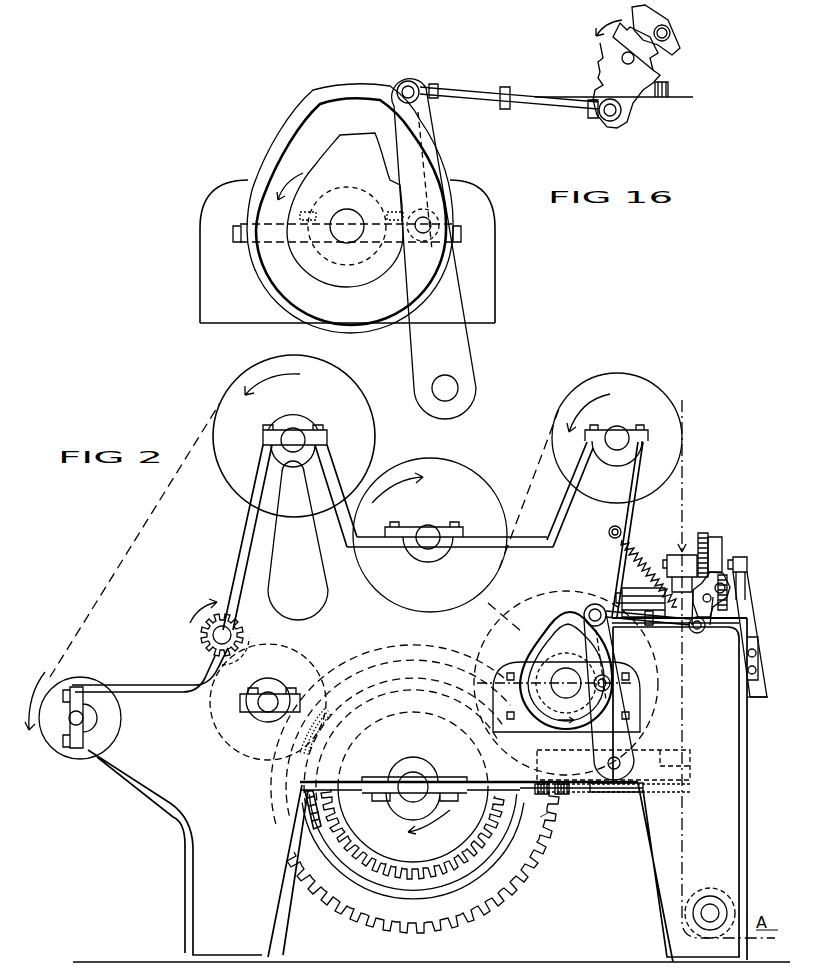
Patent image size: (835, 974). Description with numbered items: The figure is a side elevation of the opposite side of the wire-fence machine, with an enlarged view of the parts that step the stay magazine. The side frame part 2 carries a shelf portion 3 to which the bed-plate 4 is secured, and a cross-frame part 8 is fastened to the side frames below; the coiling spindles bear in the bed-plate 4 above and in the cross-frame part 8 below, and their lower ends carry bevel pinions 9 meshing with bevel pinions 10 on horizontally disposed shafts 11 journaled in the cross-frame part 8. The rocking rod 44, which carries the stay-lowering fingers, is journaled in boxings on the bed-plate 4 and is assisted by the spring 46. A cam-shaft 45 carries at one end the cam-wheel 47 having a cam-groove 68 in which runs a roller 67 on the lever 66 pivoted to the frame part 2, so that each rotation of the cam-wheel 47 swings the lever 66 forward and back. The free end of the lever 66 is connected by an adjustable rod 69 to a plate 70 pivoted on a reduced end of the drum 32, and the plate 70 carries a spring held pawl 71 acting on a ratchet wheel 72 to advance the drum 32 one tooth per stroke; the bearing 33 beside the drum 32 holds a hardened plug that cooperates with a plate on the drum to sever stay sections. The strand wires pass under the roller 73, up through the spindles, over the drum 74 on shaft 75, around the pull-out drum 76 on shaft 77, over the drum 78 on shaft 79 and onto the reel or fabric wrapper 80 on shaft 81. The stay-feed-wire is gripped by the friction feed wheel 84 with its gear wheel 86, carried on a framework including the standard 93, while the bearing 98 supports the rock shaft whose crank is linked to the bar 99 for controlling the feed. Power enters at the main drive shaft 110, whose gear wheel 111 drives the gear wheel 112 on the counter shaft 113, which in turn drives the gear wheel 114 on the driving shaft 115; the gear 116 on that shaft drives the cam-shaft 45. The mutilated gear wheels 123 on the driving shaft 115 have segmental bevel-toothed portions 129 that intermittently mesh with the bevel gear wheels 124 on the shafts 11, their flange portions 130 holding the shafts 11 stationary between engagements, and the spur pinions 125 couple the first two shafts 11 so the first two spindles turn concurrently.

In FIG. 2, the side frame part 2 is at (409, 702).
In FIG. 2, the shelf portion 3 is at (714, 649).
In FIG. 2, the bed-plate 4 is at (749, 620).
In FIG. 2, the cross-frame part 8 is at (695, 758).
In FIG. 2, the bevel pinion 9 is at (688, 784).
In FIG. 2, the bevel pinion 10 is at (678, 792).
In FIG. 2, the horizontally disposed shaft 11 is at (601, 788).
In FIG. 16, the drum 32 is at (622, 59).
In FIG. 16, the bearing 33 is at (668, 90).
In FIG. 2, the rocking rod 44 is at (641, 625).
In FIG. 16, the cam-shaft 45 is at (348, 224).
In FIG. 2, the cam-shaft 45 is at (567, 683).
In FIG. 2, the spring 46 is at (620, 541).
In FIG. 16, the cam-wheel 47 is at (268, 286).
In FIG. 2, the cam-wheel 47 is at (548, 686).
In FIG. 16, the lever 66 is at (455, 357).
In FIG. 2, the lever 66 is at (603, 743).
In FIG. 16, the roller 67 is at (432, 216).
In FIG. 2, the roller 67 is at (608, 690).
In FIG. 16, the cam-groove 68 is at (351, 211).
In FIG. 2, the cam-groove 68 is at (558, 636).
In FIG. 16, the rod 69 is at (448, 94).
In FIG. 2, the rod 69 is at (594, 610).
In FIG. 16, the plate 70 is at (630, 103).
In FIG. 2, the plate 70 is at (702, 633).
In FIG. 16, the spring held pawl 71 is at (653, 24).
In FIG. 2, the spring held pawl 71 is at (745, 568).
In FIG. 16, the ratchet wheel 72 is at (604, 61).
In FIG. 2, the ratchet wheel 72 is at (728, 594).
In FIG. 2, the roller 73 is at (722, 908).
In FIG. 2, the drum 74 is at (632, 392).
In FIG. 2, the shaft 75 is at (620, 434).
In FIG. 2, the pull-out drum 76 is at (447, 475).
In FIG. 2, the shaft 77 is at (425, 530).
In FIG. 2, the drum 78 is at (347, 414).
In FIG. 2, the shaft 79 is at (293, 432).
In FIG. 2, the reel or fabric wrapper 80 is at (74, 684).
In FIG. 2, the shaft 81 is at (70, 716).
In FIG. 2, the friction feed wheel 84 is at (722, 548).
In FIG. 2, the gear wheel 86 is at (708, 533).
In FIG. 2, the standard 93 is at (757, 634).
In FIG. 2, the bearing 98 is at (759, 657).
In FIG. 2, the bar 99 is at (752, 692).
In FIG. 2, the main drive shaft 110 is at (233, 633).
In FIG. 2, the gear wheel 111 is at (200, 628).
In FIG. 2, the gear wheel 112 is at (306, 648).
In FIG. 2, the counter shaft 113 is at (280, 688).
In FIG. 2, the gear wheel 114 is at (396, 650).
In FIG. 2, the driving shaft 115 is at (420, 778).
In FIG. 2, the gear 116 is at (407, 871).
In FIG. 2, the mutilated gear wheel 123 is at (346, 857).
In FIG. 2, the bevel gear wheel 124 is at (542, 817).
In FIG. 2, the spur pinion 125 is at (563, 794).
In FIG. 2, the segmental bevel-toothed portion 129 is at (305, 820).
In FIG. 2, the flange portion 130 is at (342, 878).